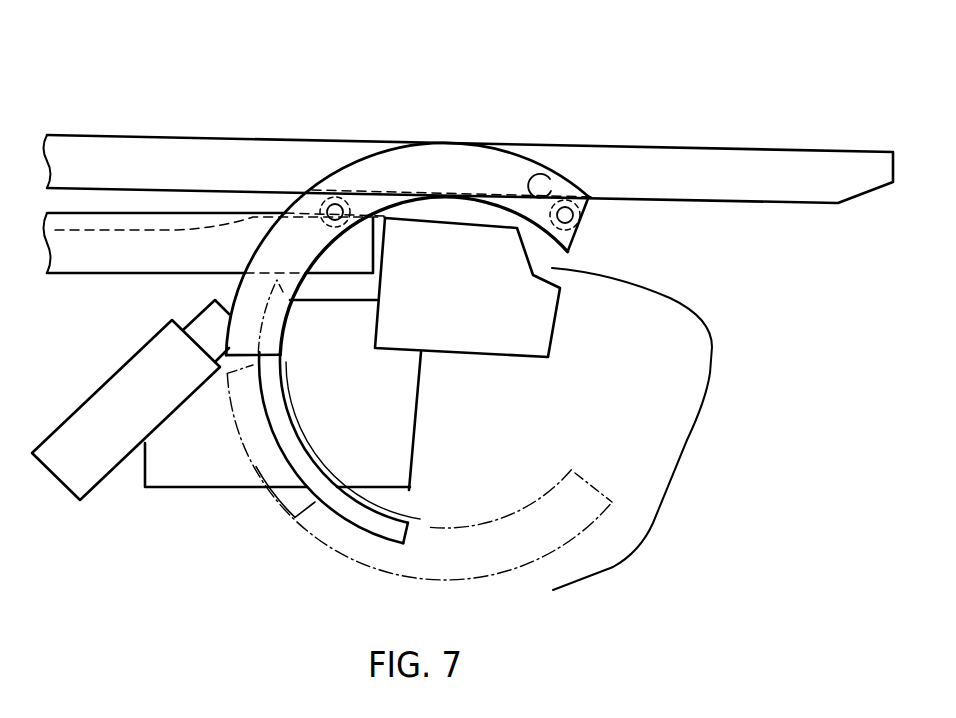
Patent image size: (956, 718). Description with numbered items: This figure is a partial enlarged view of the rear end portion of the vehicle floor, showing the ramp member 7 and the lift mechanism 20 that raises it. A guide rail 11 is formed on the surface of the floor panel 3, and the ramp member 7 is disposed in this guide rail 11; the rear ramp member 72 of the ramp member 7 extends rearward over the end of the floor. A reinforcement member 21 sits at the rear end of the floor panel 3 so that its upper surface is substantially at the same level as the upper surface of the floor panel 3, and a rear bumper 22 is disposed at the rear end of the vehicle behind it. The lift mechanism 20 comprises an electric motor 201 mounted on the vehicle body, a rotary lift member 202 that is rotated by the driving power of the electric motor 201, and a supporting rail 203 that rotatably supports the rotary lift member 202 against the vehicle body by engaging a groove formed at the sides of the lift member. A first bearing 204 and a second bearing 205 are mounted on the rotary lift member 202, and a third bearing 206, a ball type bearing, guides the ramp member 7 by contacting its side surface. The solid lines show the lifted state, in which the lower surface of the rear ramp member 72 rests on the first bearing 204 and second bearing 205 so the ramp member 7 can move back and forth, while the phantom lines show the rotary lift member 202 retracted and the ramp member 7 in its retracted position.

The ramp member 7 is at (162, 115).
The rear ramp member 72 is at (643, 168).
The floor panel 3 is at (48, 272).
The guide rail 11 is at (130, 253).
The electric motor 201 is at (85, 473).
The lift mechanism 20 is at (208, 432).
The supporting rail 203 is at (297, 458).
The rotary lift member 202 is at (438, 158).
The first bearing 204 is at (338, 197).
The second bearing 205 is at (594, 220).
The third bearing 206 is at (548, 176).
The reinforcement member 21 is at (535, 322).
The rear bumper 22 is at (708, 377).